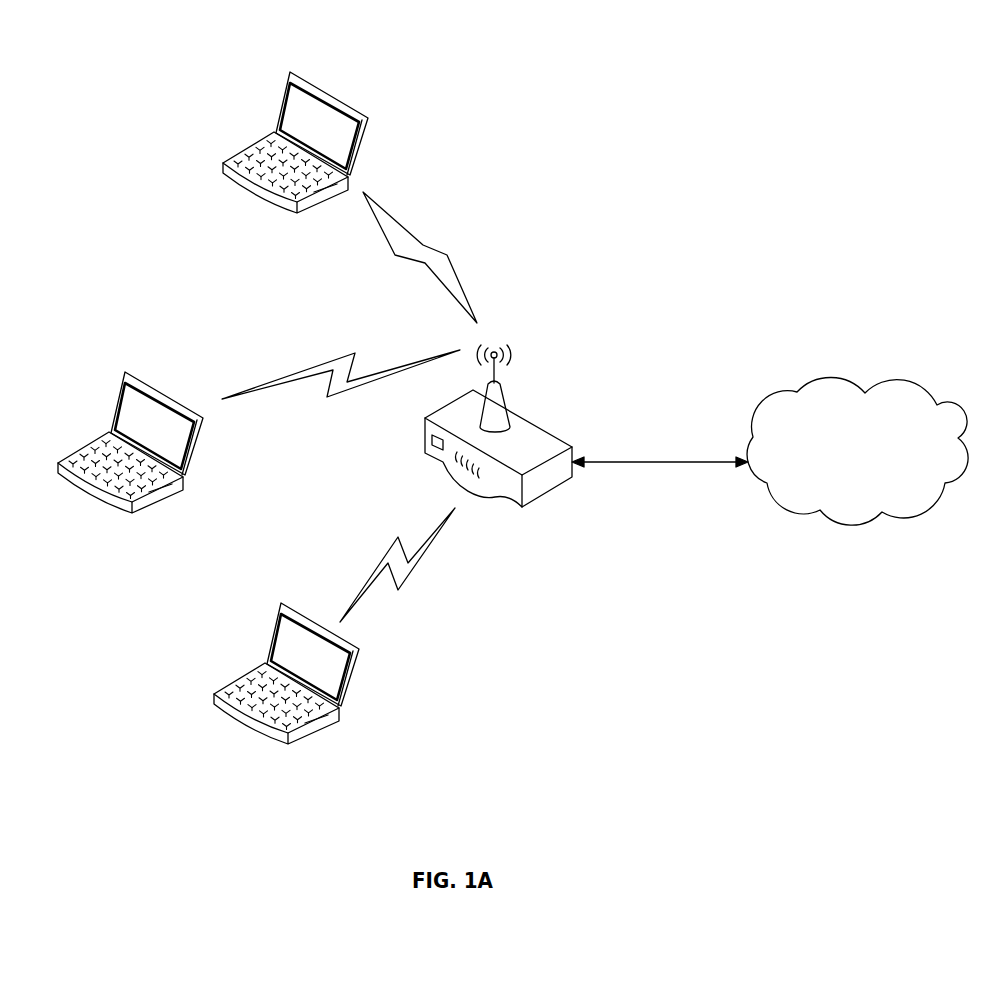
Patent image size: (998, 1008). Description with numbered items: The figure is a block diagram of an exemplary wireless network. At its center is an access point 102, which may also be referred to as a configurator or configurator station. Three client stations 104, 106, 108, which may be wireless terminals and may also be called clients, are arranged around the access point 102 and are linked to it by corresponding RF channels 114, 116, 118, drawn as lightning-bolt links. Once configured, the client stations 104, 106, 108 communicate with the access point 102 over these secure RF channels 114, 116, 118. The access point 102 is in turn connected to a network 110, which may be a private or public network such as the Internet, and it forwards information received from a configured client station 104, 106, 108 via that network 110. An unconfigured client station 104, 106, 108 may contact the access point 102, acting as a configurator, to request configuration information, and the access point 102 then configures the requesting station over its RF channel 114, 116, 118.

The access point 102 is at (546, 432).
The client station 104 is at (284, 86).
The client station 106 is at (119, 386).
The client station 108 is at (280, 608).
The network 110 is at (800, 392).
The RF channel 114 is at (400, 222).
The RF channel 116 is at (320, 362).
The RF channel 118 is at (382, 560).